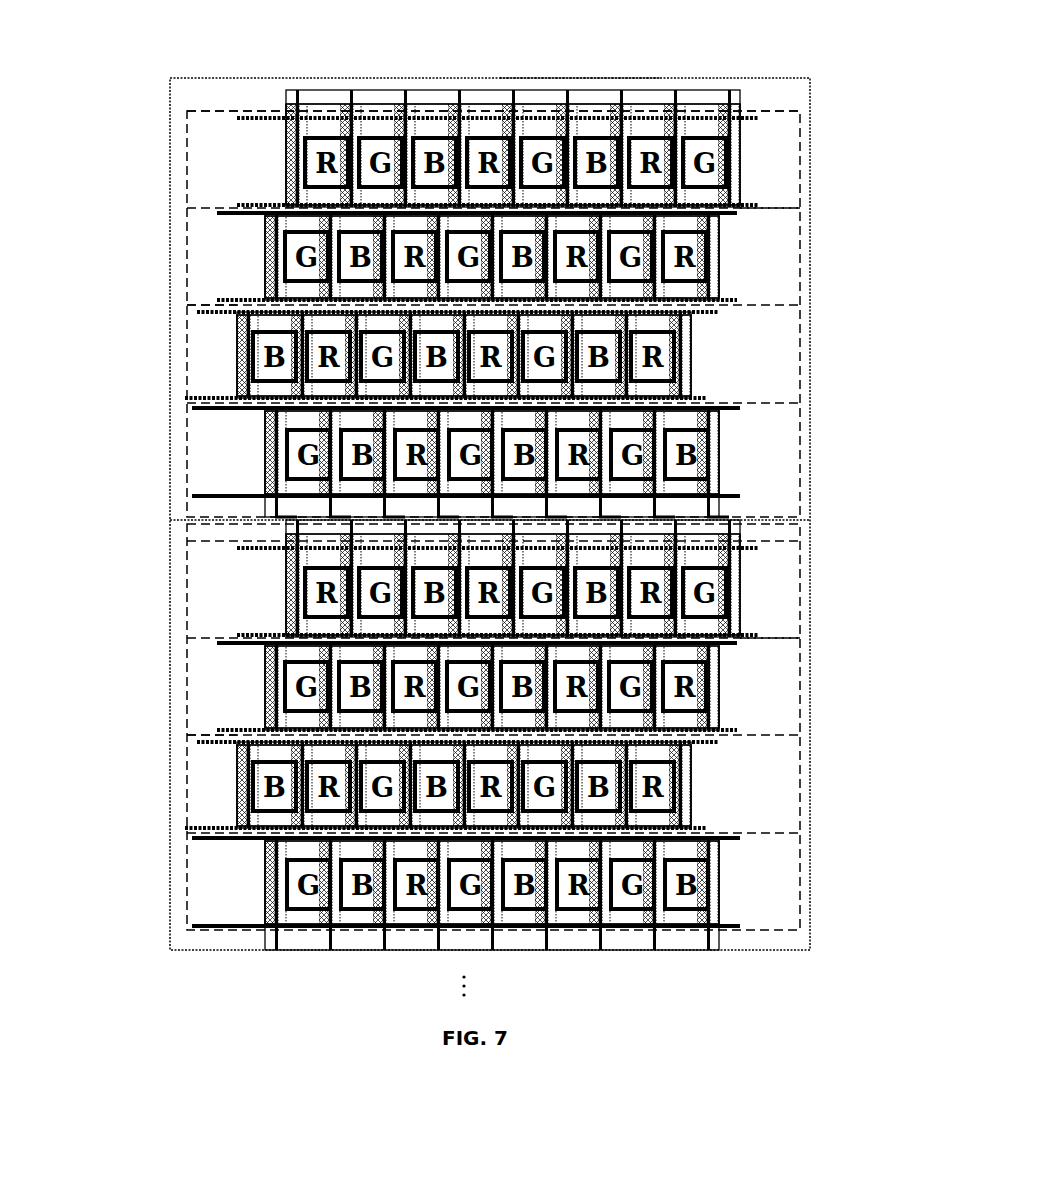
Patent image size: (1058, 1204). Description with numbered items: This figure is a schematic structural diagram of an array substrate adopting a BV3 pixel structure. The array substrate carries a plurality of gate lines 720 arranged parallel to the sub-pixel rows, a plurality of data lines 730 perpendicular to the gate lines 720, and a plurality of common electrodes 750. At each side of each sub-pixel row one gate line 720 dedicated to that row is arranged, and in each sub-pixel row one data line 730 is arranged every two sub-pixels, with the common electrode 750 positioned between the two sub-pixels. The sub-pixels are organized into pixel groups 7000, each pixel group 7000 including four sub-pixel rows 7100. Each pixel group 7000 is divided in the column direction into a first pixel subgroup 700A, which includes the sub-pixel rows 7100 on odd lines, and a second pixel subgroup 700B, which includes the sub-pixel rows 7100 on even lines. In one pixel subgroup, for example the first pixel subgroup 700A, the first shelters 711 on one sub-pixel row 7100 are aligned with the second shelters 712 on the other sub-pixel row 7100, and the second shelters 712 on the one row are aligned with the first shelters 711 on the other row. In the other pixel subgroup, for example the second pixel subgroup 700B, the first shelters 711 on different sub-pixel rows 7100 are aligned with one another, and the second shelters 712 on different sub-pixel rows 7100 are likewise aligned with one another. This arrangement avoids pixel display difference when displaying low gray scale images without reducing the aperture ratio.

The pixel group 7000 is at (802, 95).
The sub-pixel row 7100 is at (795, 165).
The first pixel subgroup 700A is at (783, 186).
The second pixel subgroup 700B is at (195, 458).
The common electrode 750 is at (580, 78).
The gate line 720 is at (697, 115).
The data line 730 is at (727, 93).
The first shelter 711 is at (293, 110).
The second shelter 712 is at (350, 110).